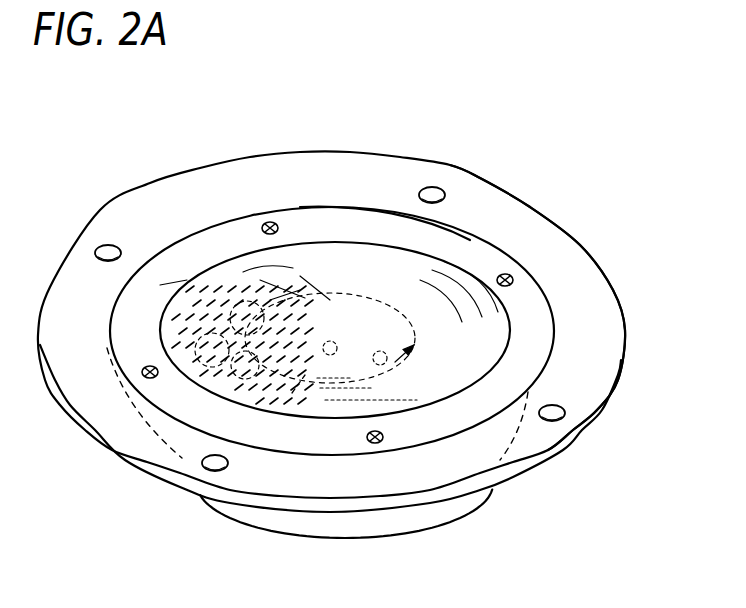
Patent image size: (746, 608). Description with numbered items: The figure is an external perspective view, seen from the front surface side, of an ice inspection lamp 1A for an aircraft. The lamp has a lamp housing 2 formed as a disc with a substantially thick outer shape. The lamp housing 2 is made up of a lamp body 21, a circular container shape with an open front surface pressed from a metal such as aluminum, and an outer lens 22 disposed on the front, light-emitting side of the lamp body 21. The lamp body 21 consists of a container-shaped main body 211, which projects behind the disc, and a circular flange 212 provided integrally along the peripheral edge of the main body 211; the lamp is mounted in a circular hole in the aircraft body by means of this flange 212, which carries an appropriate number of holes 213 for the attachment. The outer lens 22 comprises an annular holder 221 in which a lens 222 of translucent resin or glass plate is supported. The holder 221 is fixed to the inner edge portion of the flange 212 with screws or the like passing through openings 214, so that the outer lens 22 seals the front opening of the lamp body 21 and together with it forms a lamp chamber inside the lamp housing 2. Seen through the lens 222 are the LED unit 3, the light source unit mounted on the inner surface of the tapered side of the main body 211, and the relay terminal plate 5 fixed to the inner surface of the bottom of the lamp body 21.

The ice inspection lamp 1A is at (510, 180).
The lamp housing 2 is at (607, 268).
The lamp body 21 is at (525, 474).
The main body 211 is at (437, 517).
The flange 212 is at (596, 354).
The holes 213 is at (567, 414).
The openings 214 is at (512, 273).
The outer lens 22 is at (321, 203).
The holder 221 is at (382, 225).
The lens 222 is at (322, 263).
The LED unit 3 is at (200, 307).
The relay terminal plate 5 is at (292, 393).